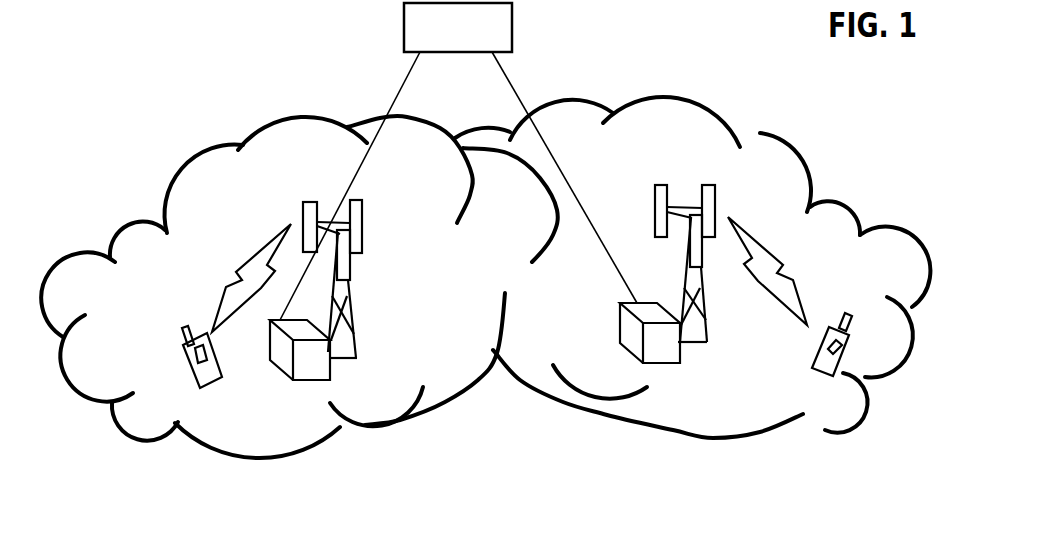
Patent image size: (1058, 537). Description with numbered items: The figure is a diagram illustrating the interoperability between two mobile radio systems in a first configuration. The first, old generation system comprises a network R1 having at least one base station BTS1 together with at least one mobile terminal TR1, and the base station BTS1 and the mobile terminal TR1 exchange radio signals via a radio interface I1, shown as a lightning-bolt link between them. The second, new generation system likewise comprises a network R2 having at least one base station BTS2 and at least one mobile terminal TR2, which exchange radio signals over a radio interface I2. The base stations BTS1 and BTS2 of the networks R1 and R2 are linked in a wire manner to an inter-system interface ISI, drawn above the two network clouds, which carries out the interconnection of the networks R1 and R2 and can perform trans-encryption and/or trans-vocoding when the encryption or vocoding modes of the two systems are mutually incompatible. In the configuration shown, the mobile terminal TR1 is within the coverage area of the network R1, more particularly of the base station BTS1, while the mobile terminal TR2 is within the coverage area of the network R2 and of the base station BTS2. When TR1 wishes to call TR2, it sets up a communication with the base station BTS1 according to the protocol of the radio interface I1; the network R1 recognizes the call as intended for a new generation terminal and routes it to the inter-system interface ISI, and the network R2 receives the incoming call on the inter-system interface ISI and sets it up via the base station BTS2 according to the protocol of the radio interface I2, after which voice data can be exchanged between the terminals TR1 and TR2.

The inter-system interface ISI is at (442, 40).
The network R1 is at (148, 322).
The network R2 is at (573, 322).
The base station BTS1 is at (310, 380).
The base station BTS2 is at (655, 363).
The mobile terminal TR1 is at (193, 373).
The mobile terminal TR2 is at (823, 377).
The radio interface I1 is at (250, 267).
The radio interface I2 is at (773, 257).